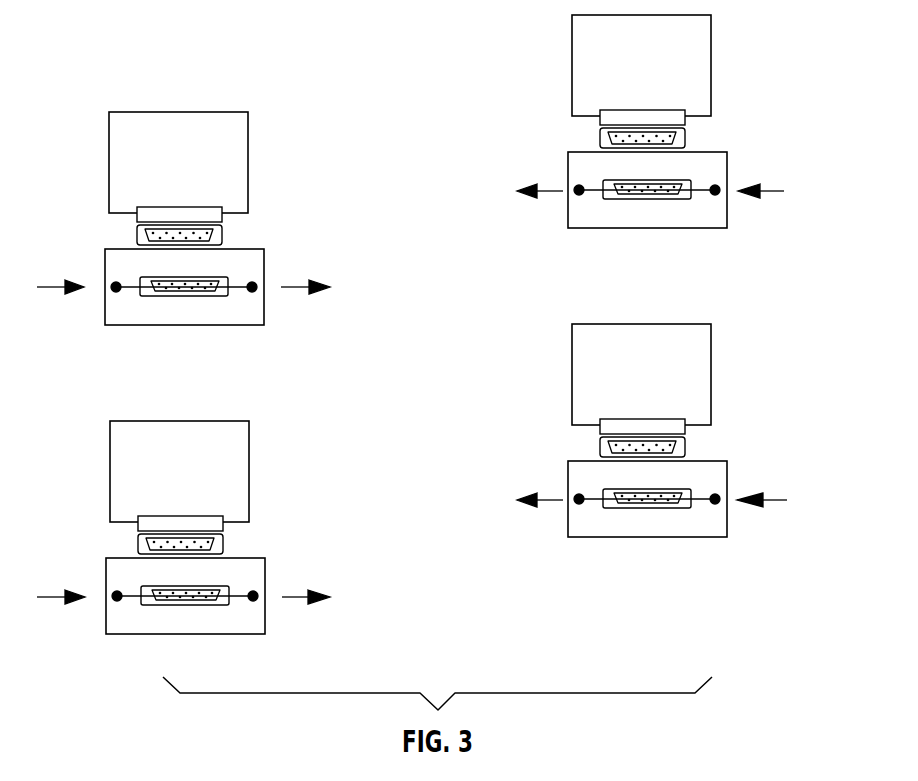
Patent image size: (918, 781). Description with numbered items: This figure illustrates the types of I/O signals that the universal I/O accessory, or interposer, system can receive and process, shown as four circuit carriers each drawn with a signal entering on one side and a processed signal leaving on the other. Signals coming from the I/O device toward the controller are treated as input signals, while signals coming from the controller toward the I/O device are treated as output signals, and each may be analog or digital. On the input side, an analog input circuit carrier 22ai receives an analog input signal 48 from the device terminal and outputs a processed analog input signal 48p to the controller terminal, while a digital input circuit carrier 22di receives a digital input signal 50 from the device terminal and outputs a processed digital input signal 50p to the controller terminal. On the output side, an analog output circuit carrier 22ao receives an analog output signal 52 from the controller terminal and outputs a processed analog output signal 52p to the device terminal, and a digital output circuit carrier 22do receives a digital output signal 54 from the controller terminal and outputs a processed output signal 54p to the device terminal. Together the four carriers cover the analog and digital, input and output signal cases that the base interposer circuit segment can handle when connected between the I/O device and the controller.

The analog input circuit carrier 22ai is at (248, 141).
The analog output circuit carrier 22ao is at (711, 37).
The digital input circuit carrier 22di is at (248, 443).
The digital output circuit carrier 22do is at (710, 349).
The analog input signal 48 is at (55, 286).
The processed analog input signal 48p is at (300, 286).
The digital input signal 50 is at (55, 596).
The processed digital input signal 50p is at (302, 596).
The analog output signal 52 is at (555, 190).
The processed analog output signal 52p is at (781, 190).
The digital output signal 54 is at (544, 499).
The processed output signal 54p is at (778, 500).